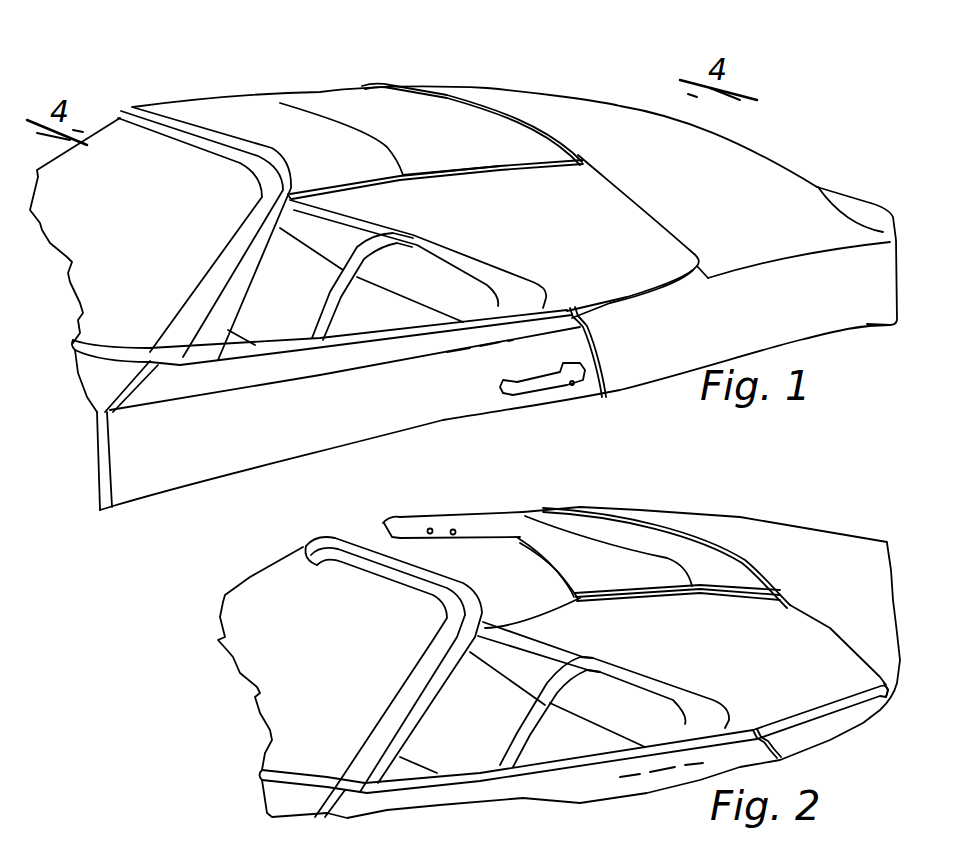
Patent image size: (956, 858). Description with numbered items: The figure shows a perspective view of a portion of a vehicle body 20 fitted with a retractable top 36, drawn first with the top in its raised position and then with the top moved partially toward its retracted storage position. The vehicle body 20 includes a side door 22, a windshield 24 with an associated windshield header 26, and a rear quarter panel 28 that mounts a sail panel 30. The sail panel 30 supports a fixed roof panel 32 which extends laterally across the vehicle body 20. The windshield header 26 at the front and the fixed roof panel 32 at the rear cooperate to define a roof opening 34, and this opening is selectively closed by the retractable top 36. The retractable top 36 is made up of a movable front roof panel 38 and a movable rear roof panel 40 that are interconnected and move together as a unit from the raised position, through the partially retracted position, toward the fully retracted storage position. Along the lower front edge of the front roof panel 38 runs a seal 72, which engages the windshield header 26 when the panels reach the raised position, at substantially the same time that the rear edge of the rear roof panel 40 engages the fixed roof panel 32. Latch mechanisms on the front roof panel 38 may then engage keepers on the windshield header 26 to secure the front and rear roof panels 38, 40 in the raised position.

In FIG. 1, the vehicle body 20 is at (118, 98).
In FIG. 2, the vehicle body 20 is at (240, 574).
In FIG. 1, the side door 22 is at (460, 407).
In FIG. 2, the side door 22 is at (620, 790).
In FIG. 1, the windshield 24 is at (120, 308).
In FIG. 2, the windshield 24 is at (273, 697).
In FIG. 1, the windshield header 26 is at (227, 152).
In FIG. 2, the windshield header 26 is at (393, 570).
In FIG. 1, the rear quarter panel 28 is at (813, 300).
In FIG. 2, the rear quarter panel 28 is at (817, 732).
In FIG. 1, the sail panel 30 is at (737, 165).
In FIG. 2, the sail panel 30 is at (870, 637).
In FIG. 1, the fixed roof panel 32 is at (563, 100).
In FIG. 2, the fixed roof panel 32 is at (780, 543).
In FIG. 1, the roof opening 34 is at (450, 100).
In FIG. 2, the roof opening 34 is at (370, 543).
In FIG. 1, the retractable top 36 is at (291, 86).
In FIG. 2, the retractable top 36 is at (502, 502).
In FIG. 1, the movable front roof panel 38 is at (215, 110).
In FIG. 2, the movable front roof panel 38 is at (627, 572).
In FIG. 1, the movable rear roof panel 40 is at (352, 110).
In FIG. 2, the movable rear roof panel 40 is at (733, 573).
In FIG. 2, the seal 72 is at (497, 538).